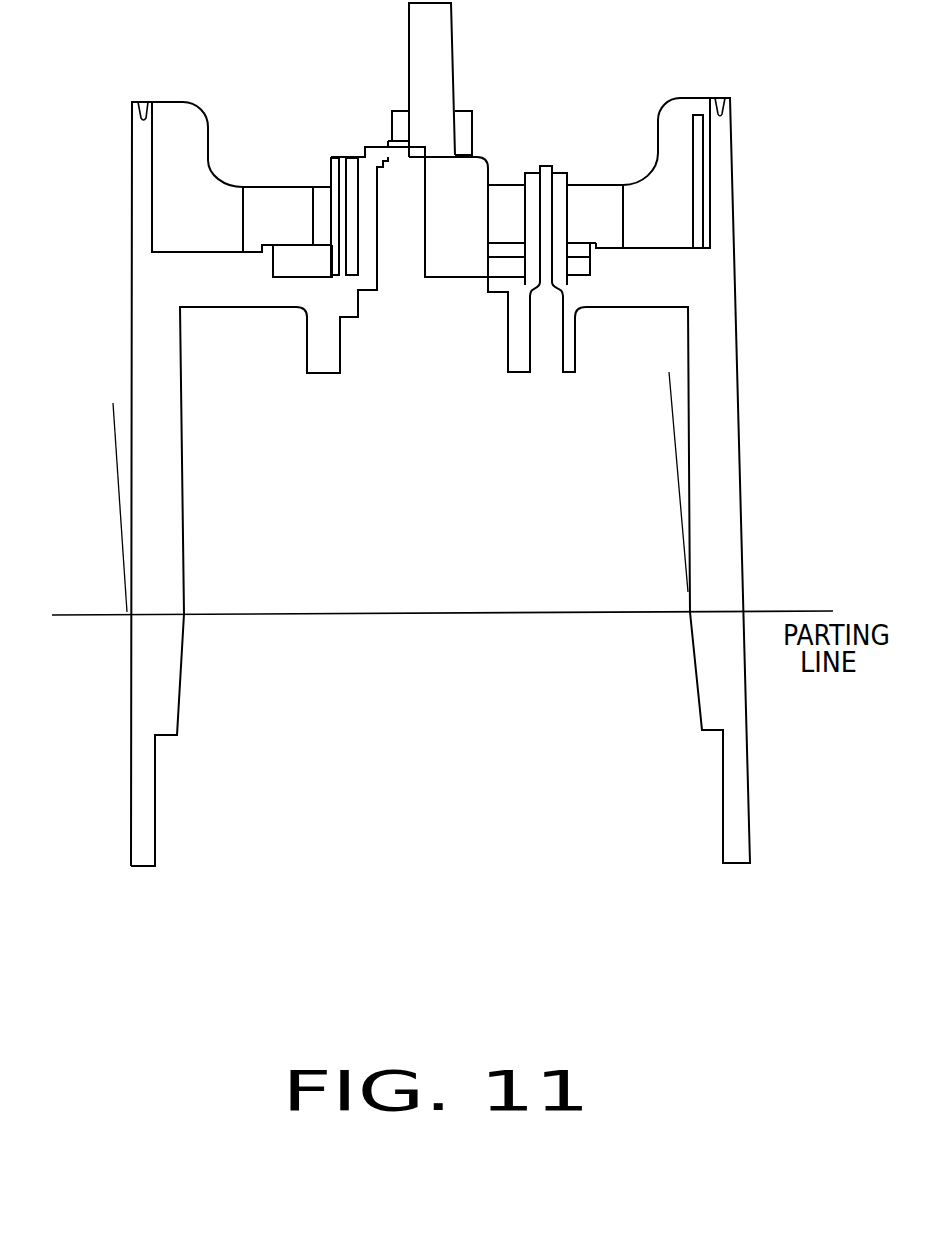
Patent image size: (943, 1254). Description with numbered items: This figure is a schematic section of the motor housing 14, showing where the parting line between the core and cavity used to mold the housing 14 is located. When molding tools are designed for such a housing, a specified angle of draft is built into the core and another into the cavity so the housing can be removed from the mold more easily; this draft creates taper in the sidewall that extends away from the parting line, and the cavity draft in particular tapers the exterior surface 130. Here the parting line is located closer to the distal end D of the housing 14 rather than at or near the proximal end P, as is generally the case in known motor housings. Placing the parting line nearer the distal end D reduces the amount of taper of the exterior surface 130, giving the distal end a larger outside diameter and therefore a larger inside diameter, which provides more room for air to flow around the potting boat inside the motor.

The housing 14 is at (735, 260).
The exterior surface 130 is at (745, 509).
The distal end D is at (130, 158).
The proximal end P is at (145, 815).